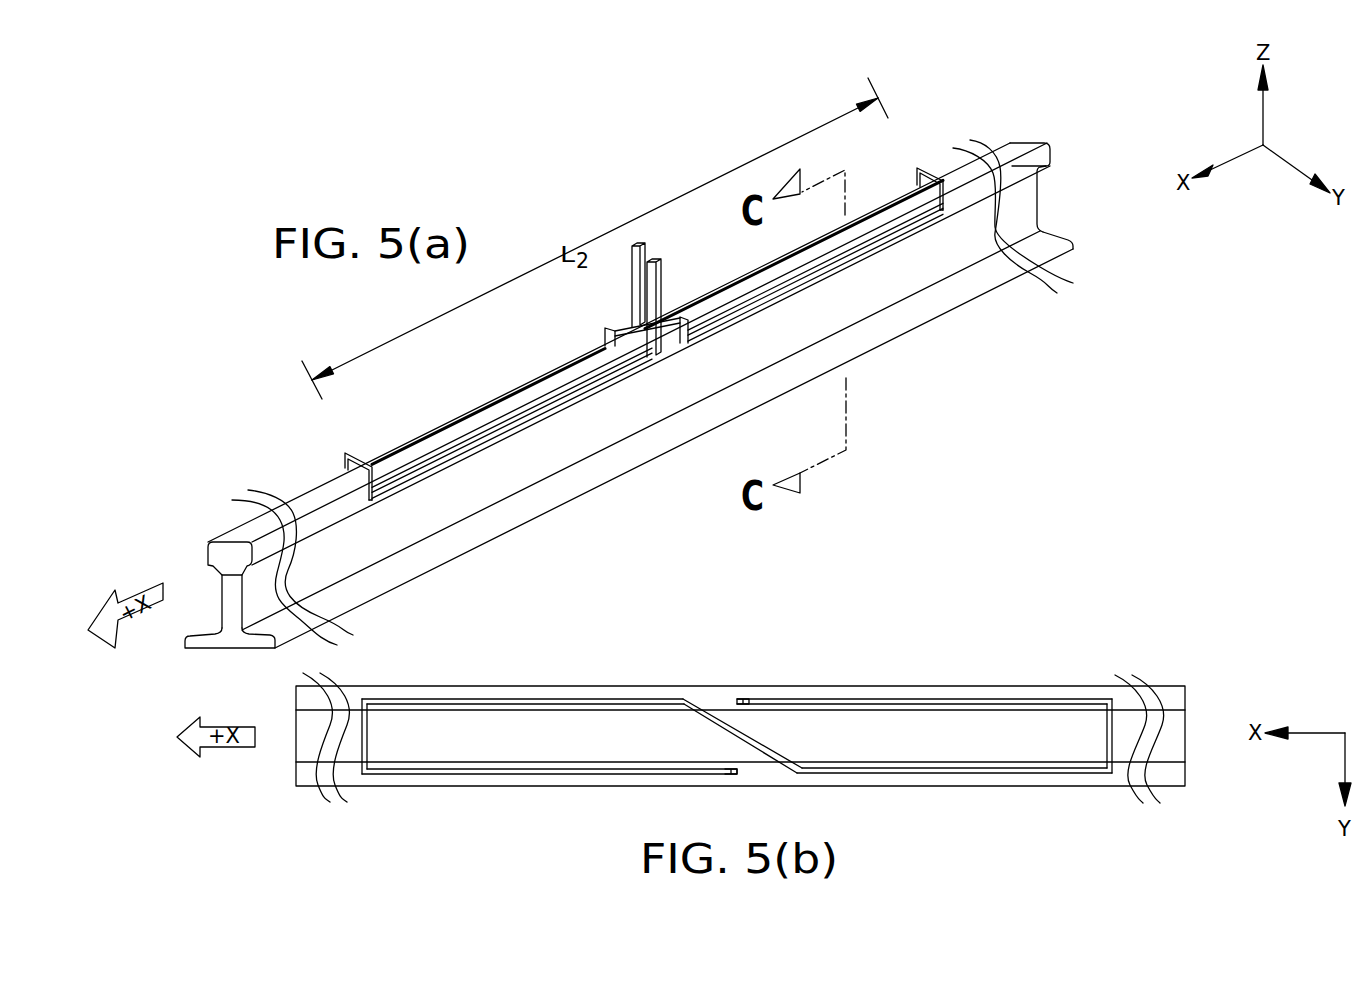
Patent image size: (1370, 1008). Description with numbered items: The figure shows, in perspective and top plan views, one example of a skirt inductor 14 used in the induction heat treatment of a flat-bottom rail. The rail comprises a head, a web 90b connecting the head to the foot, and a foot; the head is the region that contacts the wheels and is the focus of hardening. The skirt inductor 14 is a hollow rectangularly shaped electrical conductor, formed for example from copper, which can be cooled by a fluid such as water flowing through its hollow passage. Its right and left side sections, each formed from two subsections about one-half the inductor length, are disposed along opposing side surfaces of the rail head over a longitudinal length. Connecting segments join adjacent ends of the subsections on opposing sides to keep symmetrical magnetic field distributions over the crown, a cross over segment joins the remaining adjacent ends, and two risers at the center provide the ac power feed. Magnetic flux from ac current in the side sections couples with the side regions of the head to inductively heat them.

The skirt inductor 14 is at (661, 331).
The web 90b is at (1027, 207).